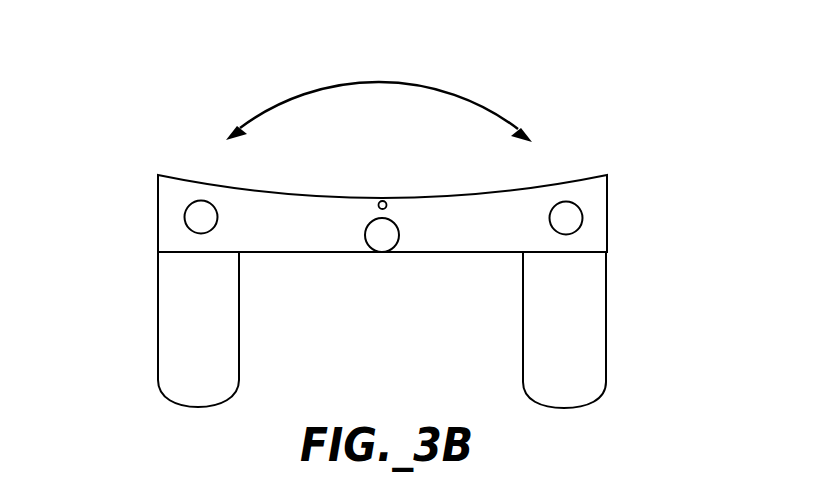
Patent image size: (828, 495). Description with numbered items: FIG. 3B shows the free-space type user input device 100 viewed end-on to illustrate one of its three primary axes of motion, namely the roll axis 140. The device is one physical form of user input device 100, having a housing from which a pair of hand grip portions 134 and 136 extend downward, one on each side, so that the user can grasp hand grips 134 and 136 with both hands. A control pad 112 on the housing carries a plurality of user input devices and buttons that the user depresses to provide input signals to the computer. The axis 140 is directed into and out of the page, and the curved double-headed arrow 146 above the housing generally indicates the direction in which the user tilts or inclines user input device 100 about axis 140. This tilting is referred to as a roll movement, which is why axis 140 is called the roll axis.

The user input device 100 is at (197, 115).
The control pad 112 is at (590, 202).
The hand grip portion 134 is at (239, 340).
The hand grip portion 136 is at (606, 340).
The axis of motion 140 is at (377, 202).
The arrow 146 is at (470, 98).